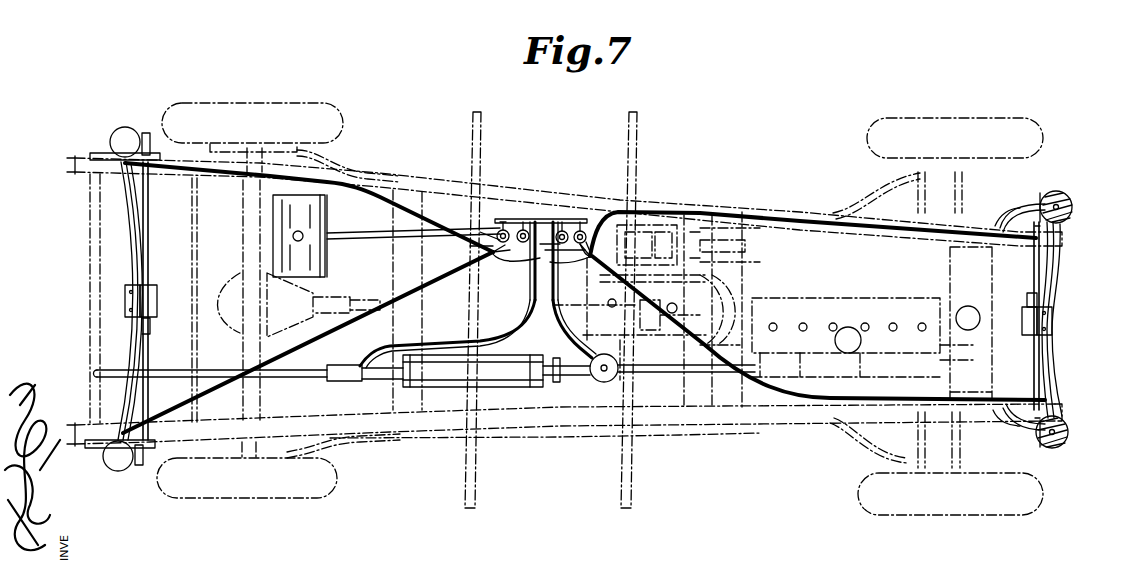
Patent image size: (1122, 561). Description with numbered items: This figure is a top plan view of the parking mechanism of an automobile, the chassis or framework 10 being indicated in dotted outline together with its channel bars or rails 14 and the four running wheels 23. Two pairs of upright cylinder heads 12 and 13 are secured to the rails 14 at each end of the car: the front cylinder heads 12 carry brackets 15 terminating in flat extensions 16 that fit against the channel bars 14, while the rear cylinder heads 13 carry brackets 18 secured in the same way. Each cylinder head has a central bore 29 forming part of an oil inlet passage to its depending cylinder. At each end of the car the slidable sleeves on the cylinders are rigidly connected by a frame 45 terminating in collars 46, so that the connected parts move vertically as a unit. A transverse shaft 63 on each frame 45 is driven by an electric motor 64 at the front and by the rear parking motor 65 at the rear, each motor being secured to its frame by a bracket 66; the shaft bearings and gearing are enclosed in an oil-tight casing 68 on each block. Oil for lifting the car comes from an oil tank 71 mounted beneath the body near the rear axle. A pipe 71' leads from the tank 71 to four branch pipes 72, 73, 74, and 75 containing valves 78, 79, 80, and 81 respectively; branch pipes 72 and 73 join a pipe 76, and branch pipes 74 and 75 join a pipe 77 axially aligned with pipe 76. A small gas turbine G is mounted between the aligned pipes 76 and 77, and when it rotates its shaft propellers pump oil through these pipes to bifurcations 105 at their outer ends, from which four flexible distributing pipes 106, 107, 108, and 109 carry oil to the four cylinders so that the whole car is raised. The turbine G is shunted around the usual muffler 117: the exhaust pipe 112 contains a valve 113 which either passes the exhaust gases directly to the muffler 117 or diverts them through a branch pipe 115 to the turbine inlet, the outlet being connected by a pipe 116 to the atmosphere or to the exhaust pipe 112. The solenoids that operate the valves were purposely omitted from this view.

The chassis or framework 10 is at (370, 412).
The front cylinder heads 12 is at (1060, 196).
The rear cylinder heads 13 is at (123, 128).
The channel bars or rails 14 is at (441, 180).
The brackets 15 is at (1026, 203).
The flat extensions 16 is at (1003, 220).
The brackets 18 is at (100, 154).
The running wheels 23 is at (335, 108).
The central bore 29 is at (1060, 207).
The frame 45 is at (130, 243).
The collars 46 is at (1072, 214).
The transverse shaft 63 is at (148, 211).
The electric motor 64 is at (1027, 300).
The rear parking motor 65 is at (151, 322).
The bracket 66 is at (150, 297).
The oil-tight box or casing 68 is at (148, 130).
The oil tank 71 is at (315, 236).
The pipe 71' is at (413, 223).
The branch pipe 72 is at (500, 233).
The branch pipe 73 is at (500, 226).
The branch pipe 74 is at (565, 217).
The branch pipe 75 is at (582, 226).
The pipe 76 is at (520, 246).
The pipe 77 is at (587, 262).
The valve 78 is at (490, 249).
The valve 79 is at (520, 246).
The valve 80 is at (558, 226).
The valve 81 is at (592, 220).
The gas turbine G is at (521, 276).
The bifurcations 105 is at (487, 254).
The distributing pipe 106 is at (785, 400).
The distributing pipe 107 is at (737, 212).
The distributing pipe 108 is at (334, 322).
The distributing pipe 109 is at (213, 180).
The exhaust pipe 112 is at (210, 368).
The valve 113 is at (598, 378).
The branch pipe 115 is at (560, 342).
The pipe 116 is at (462, 340).
The muffler 117 is at (466, 365).